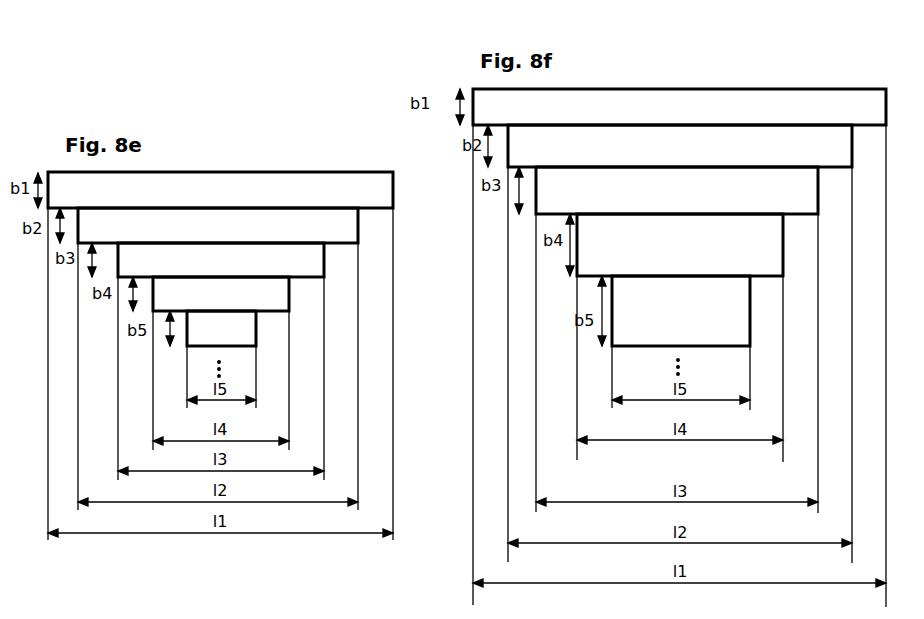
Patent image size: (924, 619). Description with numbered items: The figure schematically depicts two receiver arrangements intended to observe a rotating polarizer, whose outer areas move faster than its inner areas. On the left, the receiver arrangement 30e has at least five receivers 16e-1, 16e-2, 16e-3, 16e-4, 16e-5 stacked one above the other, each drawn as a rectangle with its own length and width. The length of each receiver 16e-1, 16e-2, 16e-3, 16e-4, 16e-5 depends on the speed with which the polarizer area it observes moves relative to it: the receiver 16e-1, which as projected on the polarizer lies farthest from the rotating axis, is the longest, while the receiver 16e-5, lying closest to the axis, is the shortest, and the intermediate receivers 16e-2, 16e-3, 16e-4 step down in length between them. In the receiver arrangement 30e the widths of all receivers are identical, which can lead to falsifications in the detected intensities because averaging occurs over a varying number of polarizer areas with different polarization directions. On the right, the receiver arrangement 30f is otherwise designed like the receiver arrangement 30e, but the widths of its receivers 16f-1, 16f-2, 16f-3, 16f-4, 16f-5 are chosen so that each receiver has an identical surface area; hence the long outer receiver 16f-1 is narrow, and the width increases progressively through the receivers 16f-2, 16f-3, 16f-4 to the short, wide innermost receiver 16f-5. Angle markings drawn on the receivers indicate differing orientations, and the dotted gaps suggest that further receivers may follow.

In FIG. 8E, the receiver arrangement 30e is at (213, 160).
In FIG. 8E, the receiver 16e-1 is at (378, 199).
In FIG. 8E, the receiver 16e-2 is at (350, 233).
In FIG. 8E, the receiver 16e-3 is at (318, 267).
In FIG. 8E, the receiver 16e-4 is at (290, 301).
In FIG. 8E, the receiver 16e-5 is at (245, 333).
In FIG. 8F, the receiver arrangement 30f is at (682, 78).
In FIG. 8F, the receiver 16f-1 is at (834, 105).
In FIG. 8F, the receiver 16f-2 is at (833, 143).
In FIG. 8F, the receiver 16f-3 is at (805, 193).
In FIG. 8F, the receiver 16f-4 is at (765, 257).
In FIG. 8F, the receiver 16f-5 is at (735, 327).